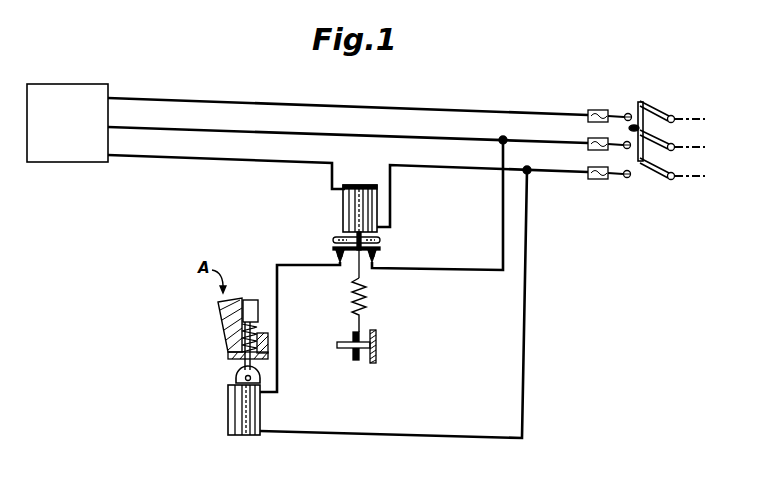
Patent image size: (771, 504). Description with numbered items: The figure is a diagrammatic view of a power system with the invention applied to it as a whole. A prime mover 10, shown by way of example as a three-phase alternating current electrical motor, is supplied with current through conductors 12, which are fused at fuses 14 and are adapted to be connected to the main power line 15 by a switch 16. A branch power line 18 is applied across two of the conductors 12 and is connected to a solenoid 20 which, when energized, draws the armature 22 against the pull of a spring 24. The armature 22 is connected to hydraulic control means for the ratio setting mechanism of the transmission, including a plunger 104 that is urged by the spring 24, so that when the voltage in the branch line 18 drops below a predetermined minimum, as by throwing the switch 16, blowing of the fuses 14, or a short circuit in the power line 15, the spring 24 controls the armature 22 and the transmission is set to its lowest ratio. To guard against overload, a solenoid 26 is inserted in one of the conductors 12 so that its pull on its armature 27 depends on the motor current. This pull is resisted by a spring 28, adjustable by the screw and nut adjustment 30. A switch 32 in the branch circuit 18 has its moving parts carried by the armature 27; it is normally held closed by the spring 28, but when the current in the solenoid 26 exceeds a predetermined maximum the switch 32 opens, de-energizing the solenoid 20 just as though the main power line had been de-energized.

The prime mover 10 is at (70, 92).
The conductors 12 is at (273, 102).
The fuses 14 is at (590, 109).
The power line 15 is at (684, 117).
The switch 16 is at (655, 105).
The branch power line 18 is at (523, 355).
The solenoid 20 is at (242, 408).
The armature 22 is at (237, 378).
The spring 24 is at (219, 335).
The solenoid 26 is at (350, 207).
The armature 27 is at (370, 239).
The spring 28 is at (360, 300).
The screw and nut adjustment 30 is at (352, 350).
The switch 32 is at (382, 249).
The plunger 104 is at (250, 312).